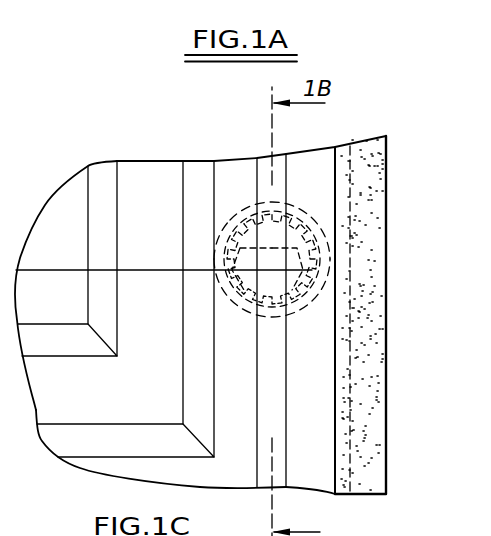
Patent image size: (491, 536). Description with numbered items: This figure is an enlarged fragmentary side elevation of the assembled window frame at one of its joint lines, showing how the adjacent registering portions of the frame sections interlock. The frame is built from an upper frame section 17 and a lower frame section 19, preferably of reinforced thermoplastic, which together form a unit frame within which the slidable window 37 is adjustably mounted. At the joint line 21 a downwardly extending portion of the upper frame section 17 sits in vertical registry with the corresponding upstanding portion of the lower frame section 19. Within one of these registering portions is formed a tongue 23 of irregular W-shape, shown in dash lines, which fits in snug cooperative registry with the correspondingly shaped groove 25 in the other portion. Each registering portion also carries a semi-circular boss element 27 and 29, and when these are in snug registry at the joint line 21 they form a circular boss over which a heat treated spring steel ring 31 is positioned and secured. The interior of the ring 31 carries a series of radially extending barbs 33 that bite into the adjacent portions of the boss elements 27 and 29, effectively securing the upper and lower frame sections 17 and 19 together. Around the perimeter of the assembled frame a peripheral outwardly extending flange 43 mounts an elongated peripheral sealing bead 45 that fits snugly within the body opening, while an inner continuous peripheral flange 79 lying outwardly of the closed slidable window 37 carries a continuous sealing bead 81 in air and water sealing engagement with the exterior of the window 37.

The upper frame section 17 is at (311, 163).
The lower frame section 19 is at (320, 482).
The joint line 21 is at (158, 271).
The tongue 23 is at (238, 310).
The groove 25 is at (306, 308).
The semi-circular boss element 27 is at (317, 231).
The semi-circular boss element 29 is at (318, 289).
The spring steel ring 31 is at (245, 210).
The radially extending barbs 33 is at (218, 251).
The slidable window 37 is at (67, 192).
The peripheral outwardly extending flange 43 is at (240, 483).
The peripheral sealing bead 45 is at (378, 476).
The inner continuous peripheral flange 79 is at (157, 173).
The continuous sealing bead 81 is at (103, 172).